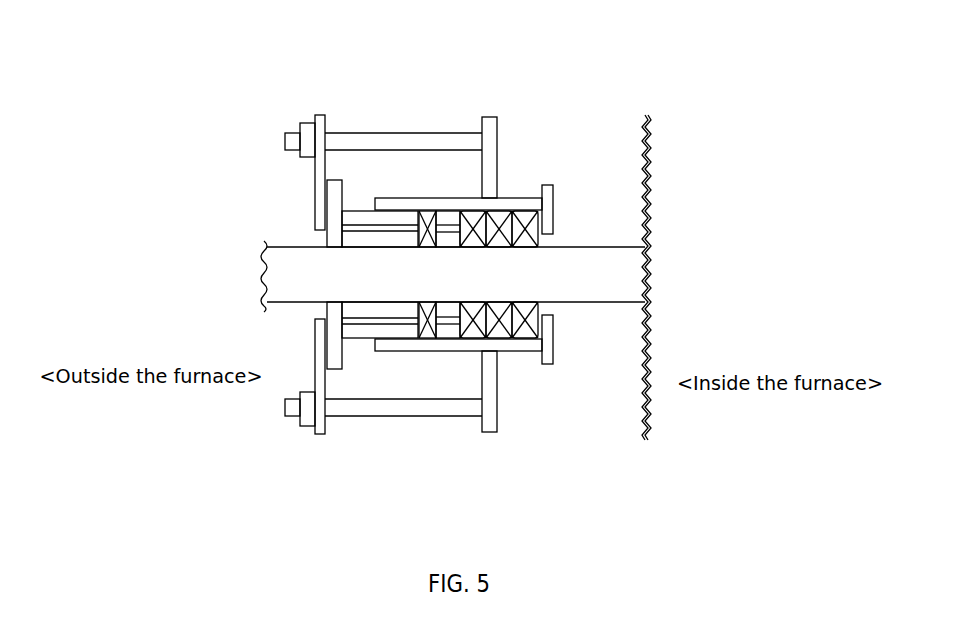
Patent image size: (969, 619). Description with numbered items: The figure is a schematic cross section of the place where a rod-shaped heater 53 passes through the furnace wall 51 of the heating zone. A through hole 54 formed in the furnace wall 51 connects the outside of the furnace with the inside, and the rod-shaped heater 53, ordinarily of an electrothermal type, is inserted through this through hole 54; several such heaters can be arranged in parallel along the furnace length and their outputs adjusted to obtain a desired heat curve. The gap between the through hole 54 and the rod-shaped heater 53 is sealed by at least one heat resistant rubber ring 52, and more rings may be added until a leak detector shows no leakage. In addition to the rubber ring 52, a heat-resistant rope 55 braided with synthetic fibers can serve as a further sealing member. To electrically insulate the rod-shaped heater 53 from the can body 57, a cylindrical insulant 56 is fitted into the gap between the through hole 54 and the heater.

The furnace wall 51 is at (535, 125).
The heat resistant rubber ring 52 is at (425, 211).
The rod-shaped heater 53 is at (605, 257).
The through hole 54 is at (288, 234).
The heat-resistant rope 55 is at (528, 338).
The cylindrical insulant 56 is at (358, 328).
The can body 57 is at (487, 122).